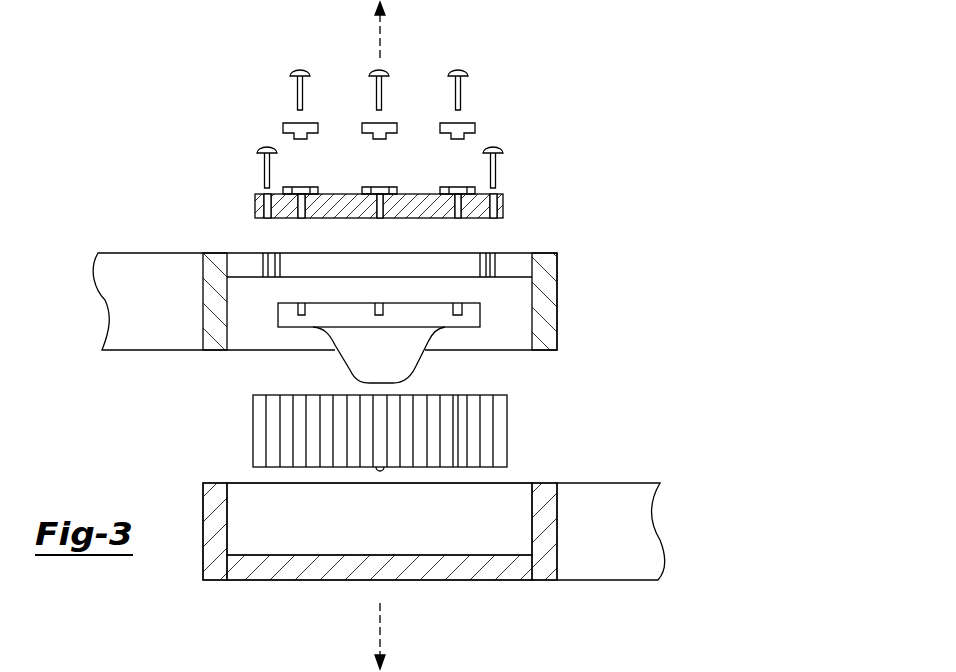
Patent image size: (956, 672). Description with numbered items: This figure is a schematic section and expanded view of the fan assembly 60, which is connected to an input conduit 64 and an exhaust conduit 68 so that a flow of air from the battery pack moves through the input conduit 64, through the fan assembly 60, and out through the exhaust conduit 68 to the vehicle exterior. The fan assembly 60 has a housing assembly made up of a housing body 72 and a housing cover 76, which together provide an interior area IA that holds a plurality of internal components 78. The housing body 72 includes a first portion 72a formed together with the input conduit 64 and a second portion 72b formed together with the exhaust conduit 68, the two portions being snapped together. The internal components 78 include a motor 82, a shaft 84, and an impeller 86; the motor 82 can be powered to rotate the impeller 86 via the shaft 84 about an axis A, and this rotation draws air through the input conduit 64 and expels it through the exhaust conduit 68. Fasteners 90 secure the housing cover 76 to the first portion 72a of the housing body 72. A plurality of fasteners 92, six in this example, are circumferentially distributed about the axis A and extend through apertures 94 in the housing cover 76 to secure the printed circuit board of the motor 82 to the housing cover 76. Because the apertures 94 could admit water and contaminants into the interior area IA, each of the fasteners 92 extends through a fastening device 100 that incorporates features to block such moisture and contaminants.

The fan assembly 60 is at (583, 88).
The input conduit 64 is at (637, 515).
The exhaust conduit 68 is at (133, 320).
The housing body 72 is at (386, 416).
The first portion 72a is at (508, 582).
The second portion 72b is at (217, 252).
The housing cover 76 is at (447, 219).
The internal components 78 is at (236, 425).
The motor 82 is at (480, 315).
The shaft 84 is at (380, 471).
The impeller 86 is at (458, 468).
The fasteners 90 is at (267, 146).
The fasteners 92 is at (458, 68).
The apertures 94 is at (302, 216).
The fastening device 100 is at (476, 128).
The interior area IA is at (277, 535).
The axis A is at (380, 620).